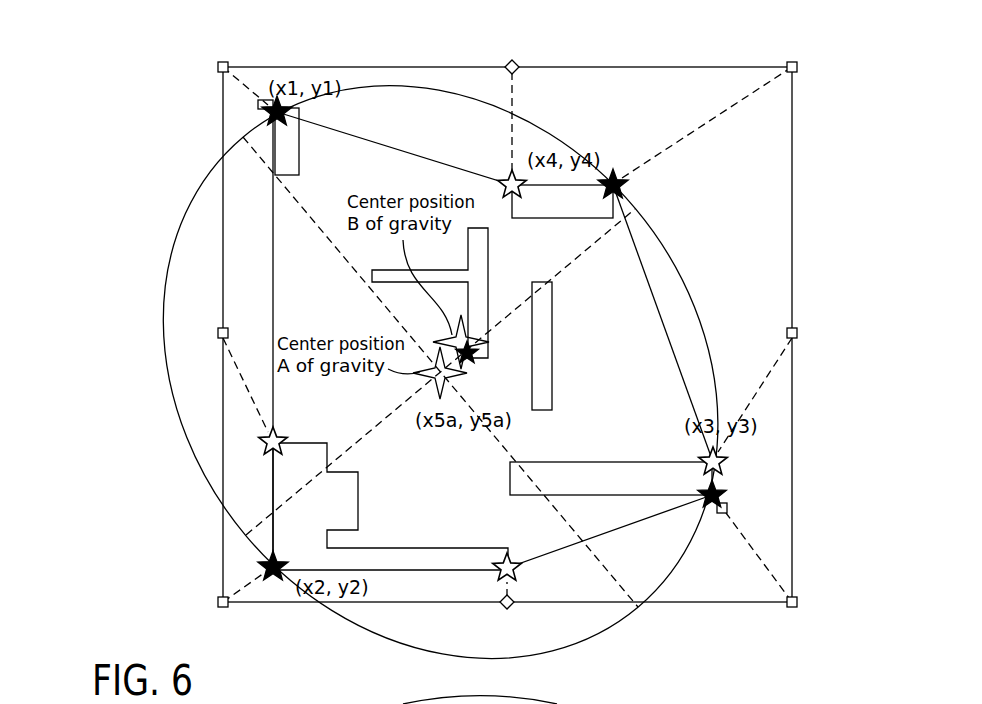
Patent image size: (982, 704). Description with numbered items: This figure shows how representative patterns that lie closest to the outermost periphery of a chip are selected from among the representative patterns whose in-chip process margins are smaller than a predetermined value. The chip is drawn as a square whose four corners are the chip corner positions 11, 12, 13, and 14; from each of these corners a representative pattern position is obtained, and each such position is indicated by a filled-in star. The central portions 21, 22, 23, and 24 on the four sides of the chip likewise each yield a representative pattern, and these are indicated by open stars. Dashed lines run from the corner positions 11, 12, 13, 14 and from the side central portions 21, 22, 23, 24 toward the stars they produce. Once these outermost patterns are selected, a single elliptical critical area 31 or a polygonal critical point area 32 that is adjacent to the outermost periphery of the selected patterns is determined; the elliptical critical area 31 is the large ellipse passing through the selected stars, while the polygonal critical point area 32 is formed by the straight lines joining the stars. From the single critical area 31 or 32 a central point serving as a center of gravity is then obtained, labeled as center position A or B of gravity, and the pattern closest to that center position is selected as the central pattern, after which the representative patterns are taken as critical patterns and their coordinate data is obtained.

The chip corner position 11 is at (218, 67).
The chip corner position 12 is at (217, 602).
The chip corner position 13 is at (798, 602).
The chip corner position 14 is at (795, 62).
The central portion of a chip side 21 is at (216, 334).
The central portion of a chip side 22 is at (511, 607).
The central portion of a chip side 23 is at (798, 333).
The central portion of a chip side 24 is at (513, 60).
The elliptical critical area 31 is at (162, 306).
The polygonal critical point area 32 is at (275, 222).